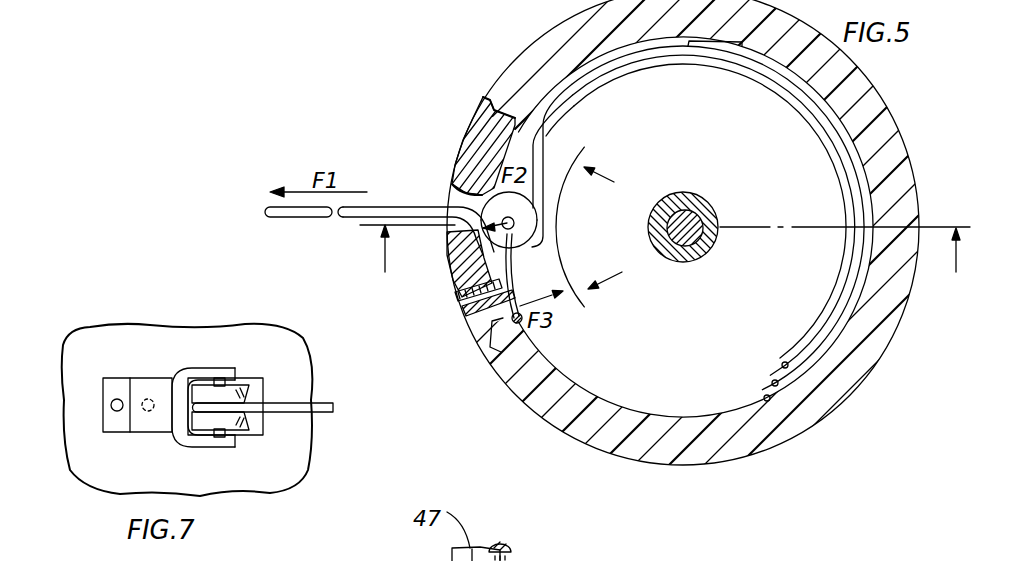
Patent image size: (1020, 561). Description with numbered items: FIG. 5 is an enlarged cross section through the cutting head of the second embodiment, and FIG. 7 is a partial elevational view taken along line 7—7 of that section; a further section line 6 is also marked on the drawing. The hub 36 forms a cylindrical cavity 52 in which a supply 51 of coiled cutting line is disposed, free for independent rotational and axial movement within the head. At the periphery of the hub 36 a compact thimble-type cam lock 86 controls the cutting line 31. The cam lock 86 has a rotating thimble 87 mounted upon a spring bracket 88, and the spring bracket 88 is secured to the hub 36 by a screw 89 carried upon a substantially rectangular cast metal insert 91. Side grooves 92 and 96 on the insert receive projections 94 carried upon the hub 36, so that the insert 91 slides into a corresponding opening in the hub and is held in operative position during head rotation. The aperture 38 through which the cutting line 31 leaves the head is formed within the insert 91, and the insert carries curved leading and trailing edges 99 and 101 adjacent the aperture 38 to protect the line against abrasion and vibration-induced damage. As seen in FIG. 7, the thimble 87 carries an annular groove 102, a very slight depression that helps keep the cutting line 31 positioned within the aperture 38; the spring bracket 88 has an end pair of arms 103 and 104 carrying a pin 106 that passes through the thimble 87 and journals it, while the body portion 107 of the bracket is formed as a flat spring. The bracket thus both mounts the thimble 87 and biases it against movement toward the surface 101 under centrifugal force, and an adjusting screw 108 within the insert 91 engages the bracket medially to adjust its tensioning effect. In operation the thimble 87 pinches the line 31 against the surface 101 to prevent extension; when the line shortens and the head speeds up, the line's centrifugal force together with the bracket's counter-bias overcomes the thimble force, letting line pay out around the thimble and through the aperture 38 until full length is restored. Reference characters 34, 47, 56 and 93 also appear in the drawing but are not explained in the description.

In FIG. 5, the section line 6- 6 is at (665, 266).
In FIG. 5, the line 7— 7 is at (598, 227).
In FIG. 5, the cutting line 31 is at (285, 219).
In FIG. 5, the housing fragment 34 is at (510, 556).
In FIG. 5, the hub 36 is at (870, 83).
In FIG. 5, the aperture 38 is at (453, 199).
In FIG. 5, the shaft 47 is at (697, 234).
In FIG. 5, the supply of coiled cutting line 51 is at (817, 129).
In FIG. 5, the cylindrical cavity 52 is at (790, 190).
In FIG. 5, the hub 56 is at (690, 193).
In FIG. 5, the cam lock 86 is at (540, 212).
In FIG. 5, the rotating thimble 87 is at (514, 215).
In FIG. 7, the rotating thimble 87 is at (242, 392).
In FIG. 5, the spring bracket 88 is at (515, 240).
In FIG. 7, the spring bracket 88 is at (148, 370).
In FIG. 5, the screw 89 is at (524, 316).
In FIG. 7, the screw 89 is at (113, 407).
In FIG. 5, the metal insert 91 is at (452, 316).
In FIG. 5, the side groove 92 is at (490, 348).
In FIG. 5, the tab 93 is at (500, 113).
In FIG. 5, the projection 94 is at (478, 119).
In FIG. 5, the side groove 96 is at (488, 338).
In FIG. 5, the leading edge 99 is at (462, 192).
In FIG. 5, the trailing edge 101 is at (450, 228).
In FIG. 7, the annular groove 102 is at (247, 400).
In FIG. 7, the arm 103 is at (193, 368).
In FIG. 7, the arm 104 is at (213, 448).
In FIG. 7, the pin 106 is at (220, 380).
In FIG. 7, the body portion 107 is at (140, 387).
In FIG. 5, the adjusting screw 108 is at (455, 296).